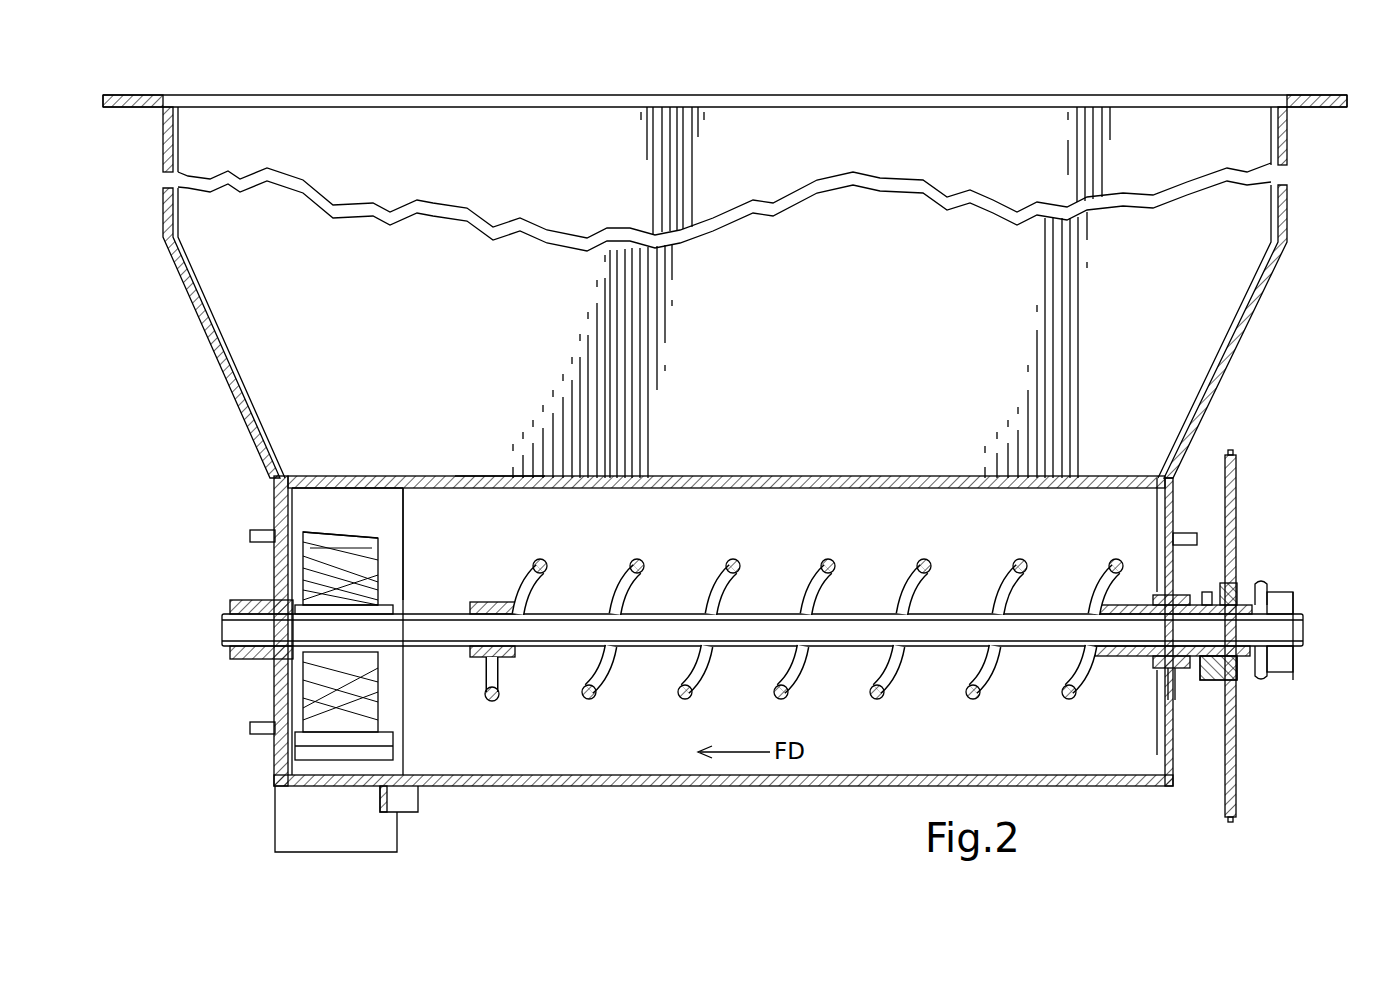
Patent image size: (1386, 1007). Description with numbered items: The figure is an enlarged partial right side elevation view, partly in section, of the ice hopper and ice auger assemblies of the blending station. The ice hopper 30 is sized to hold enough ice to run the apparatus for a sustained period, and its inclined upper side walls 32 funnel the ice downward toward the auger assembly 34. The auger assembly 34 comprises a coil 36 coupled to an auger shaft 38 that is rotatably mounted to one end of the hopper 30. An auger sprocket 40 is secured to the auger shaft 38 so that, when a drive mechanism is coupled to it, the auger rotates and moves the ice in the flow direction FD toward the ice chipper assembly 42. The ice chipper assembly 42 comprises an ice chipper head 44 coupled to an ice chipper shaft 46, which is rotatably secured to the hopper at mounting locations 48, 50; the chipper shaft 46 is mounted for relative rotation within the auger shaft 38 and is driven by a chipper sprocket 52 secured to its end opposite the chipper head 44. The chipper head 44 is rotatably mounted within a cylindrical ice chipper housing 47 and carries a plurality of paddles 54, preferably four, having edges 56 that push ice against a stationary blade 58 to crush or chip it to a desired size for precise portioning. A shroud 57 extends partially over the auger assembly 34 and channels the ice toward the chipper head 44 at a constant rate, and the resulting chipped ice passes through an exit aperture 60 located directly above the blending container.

The ice hopper 30 is at (1124, 75).
The inclined upper side walls 32 is at (257, 374).
The auger assembly 34 is at (818, 500).
The coil 36 is at (632, 578).
The auger shaft 38 is at (502, 600).
The auger sprocket 40 is at (1236, 494).
The ice chipper assembly 42 is at (408, 495).
The ice chipper head 44 is at (330, 520).
The ice chipper shaft 46 is at (770, 632).
The cylindrical ice chipper housing 47 is at (378, 472).
The mounting location 48 is at (270, 668).
The mounting location 50 is at (1185, 690).
The chipper sprocket 52 is at (1266, 596).
The paddles 54 is at (372, 572).
The edges 56 is at (348, 540).
The shroud 57 is at (470, 476).
The stationary blade 58 is at (445, 788).
The exit aperture 60 is at (410, 800).